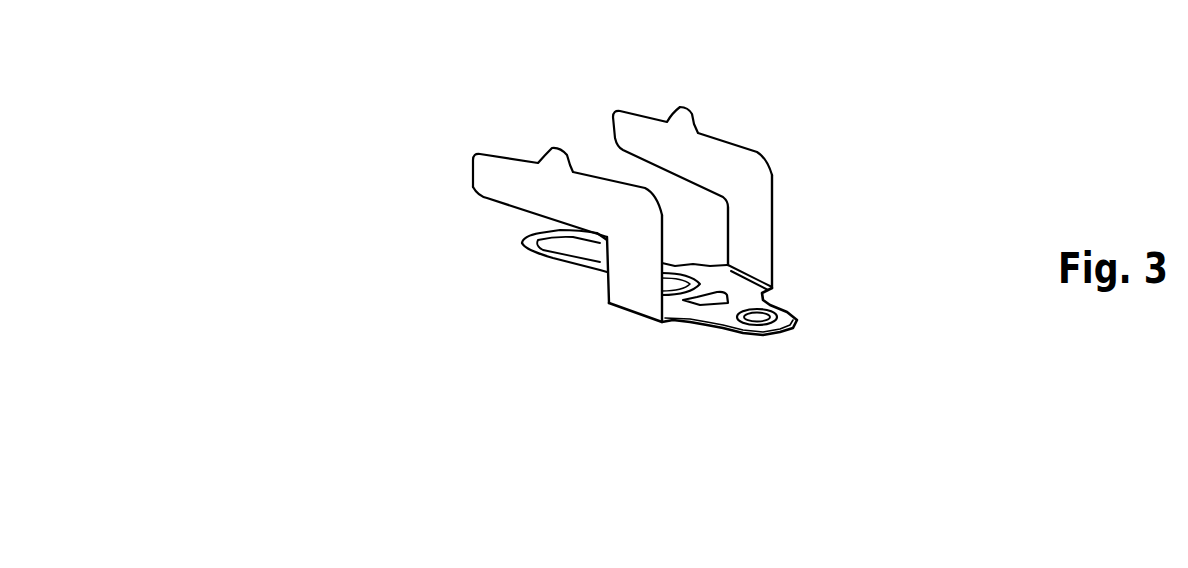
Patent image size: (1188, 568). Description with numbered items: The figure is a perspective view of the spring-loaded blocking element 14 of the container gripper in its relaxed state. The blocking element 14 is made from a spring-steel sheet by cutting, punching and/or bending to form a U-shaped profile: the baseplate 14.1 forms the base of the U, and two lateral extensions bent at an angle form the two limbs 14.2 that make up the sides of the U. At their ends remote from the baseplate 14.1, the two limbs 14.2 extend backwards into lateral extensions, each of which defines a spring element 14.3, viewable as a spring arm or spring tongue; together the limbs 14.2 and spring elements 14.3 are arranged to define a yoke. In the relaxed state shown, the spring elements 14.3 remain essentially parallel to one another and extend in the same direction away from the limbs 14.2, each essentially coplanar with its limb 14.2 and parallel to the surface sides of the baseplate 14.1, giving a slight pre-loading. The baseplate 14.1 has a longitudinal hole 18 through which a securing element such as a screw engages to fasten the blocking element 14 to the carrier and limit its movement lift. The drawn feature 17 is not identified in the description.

The blocking element 14 is at (805, 141).
The baseplate 14.1 is at (747, 319).
The limb 14.2 is at (625, 272).
The spring element 14.3 is at (483, 172).
The tongue 17 is at (568, 245).
The longitudinal hole 18 is at (694, 238).